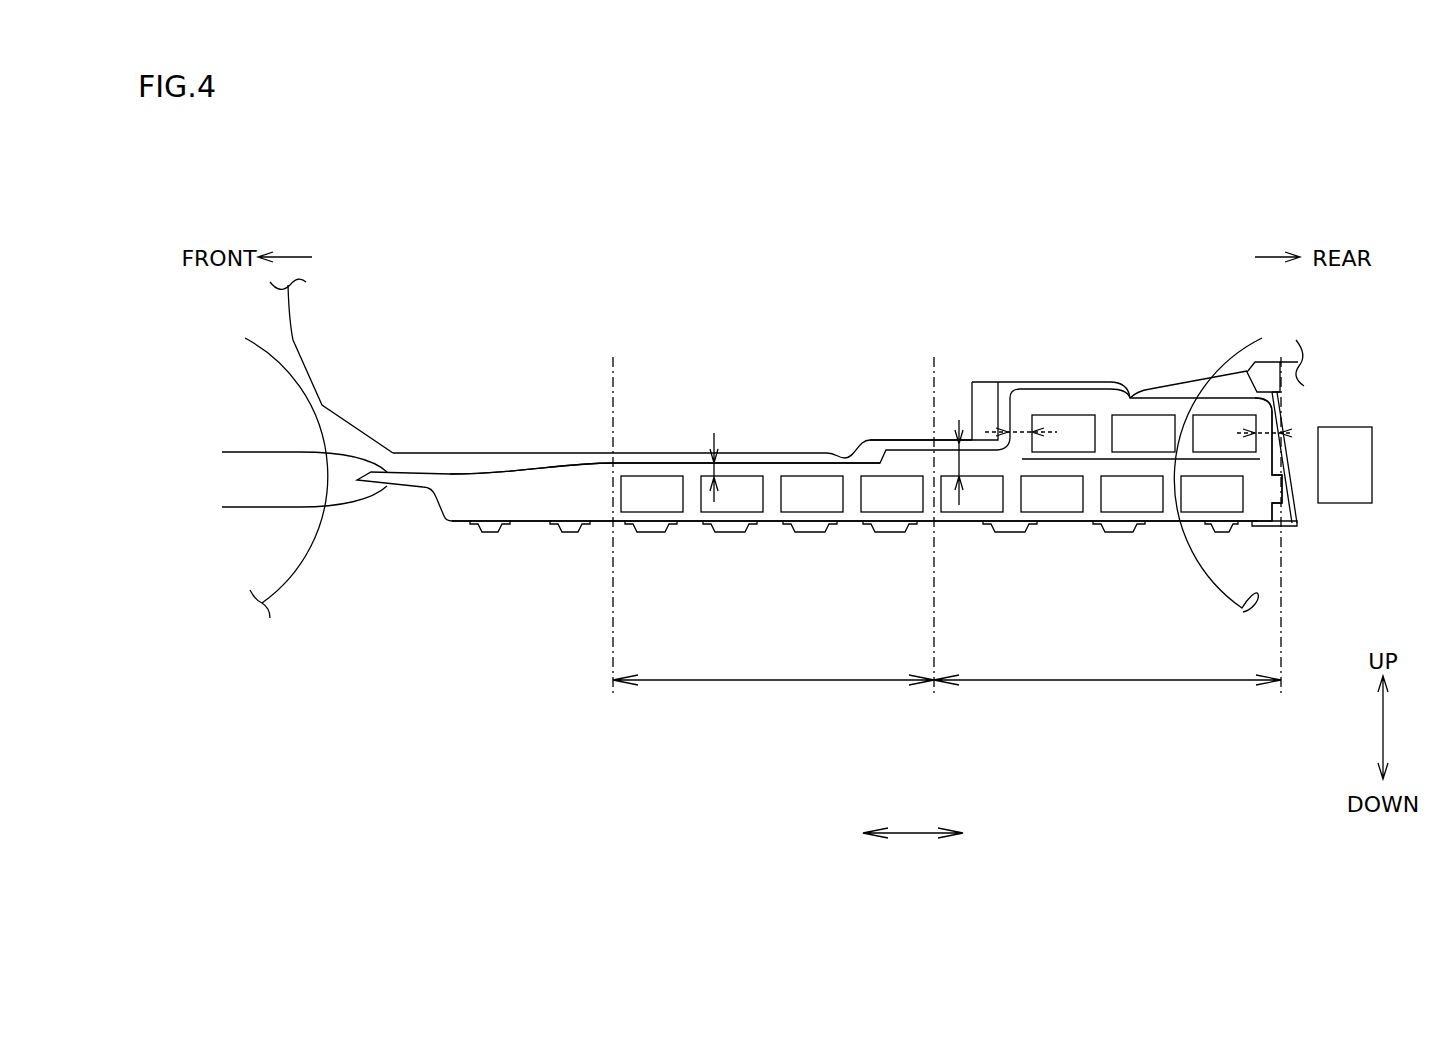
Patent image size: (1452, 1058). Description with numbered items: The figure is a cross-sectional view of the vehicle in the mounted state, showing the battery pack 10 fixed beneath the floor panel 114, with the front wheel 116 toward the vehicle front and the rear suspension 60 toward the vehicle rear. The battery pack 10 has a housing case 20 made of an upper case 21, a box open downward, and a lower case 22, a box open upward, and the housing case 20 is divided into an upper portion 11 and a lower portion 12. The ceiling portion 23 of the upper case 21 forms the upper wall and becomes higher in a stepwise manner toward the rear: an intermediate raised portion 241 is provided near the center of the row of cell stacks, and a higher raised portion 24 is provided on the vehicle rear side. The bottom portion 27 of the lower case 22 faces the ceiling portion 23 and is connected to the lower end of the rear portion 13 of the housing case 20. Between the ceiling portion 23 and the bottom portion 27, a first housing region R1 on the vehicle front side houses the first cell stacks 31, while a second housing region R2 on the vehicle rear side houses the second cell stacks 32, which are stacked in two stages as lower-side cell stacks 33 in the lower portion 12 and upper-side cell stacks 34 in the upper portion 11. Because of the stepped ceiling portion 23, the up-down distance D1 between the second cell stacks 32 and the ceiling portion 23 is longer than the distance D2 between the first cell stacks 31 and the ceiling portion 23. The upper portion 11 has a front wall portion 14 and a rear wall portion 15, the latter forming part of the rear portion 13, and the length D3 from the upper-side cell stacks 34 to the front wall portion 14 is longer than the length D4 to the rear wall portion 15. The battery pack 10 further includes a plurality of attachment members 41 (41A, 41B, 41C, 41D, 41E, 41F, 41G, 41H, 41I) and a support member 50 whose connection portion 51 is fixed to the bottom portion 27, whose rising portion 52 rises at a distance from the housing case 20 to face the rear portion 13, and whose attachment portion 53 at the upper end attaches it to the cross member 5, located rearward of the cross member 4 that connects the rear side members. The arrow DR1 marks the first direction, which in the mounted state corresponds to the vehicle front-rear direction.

The cross member 4 is at (987, 393).
The cross member 5 is at (1268, 372).
The battery pack 10 is at (420, 544).
The upper portion 11 is at (1144, 376).
The lower portion 12 is at (1070, 538).
The rear portion 13 is at (1280, 480).
The front wall portion 14 is at (848, 379).
The rear wall portion 15 is at (1285, 425).
The housing case 20 is at (537, 453).
The upper case 21 is at (289, 457).
The lower case 22 is at (289, 503).
The ceiling portion 23 is at (762, 462).
The raised portion 24 is at (1110, 385).
The bottom portion 27 is at (957, 528).
The first cell stack 31 is at (642, 485).
The second cell stack 32 is at (1100, 470).
The lower-side cell stack 33 is at (982, 500).
The upper-side cell stack 34 is at (1060, 430).
The attachment member 41 is at (844, 566).
The attachment member 41A is at (483, 535).
The attachment member 41B is at (563, 535).
The attachment member 41C is at (654, 535).
The attachment member 41D is at (730, 535).
The attachment member 41E is at (813, 535).
The attachment member 41F is at (890, 535).
The attachment member 41G is at (1013, 535).
The attachment member 41H is at (1120, 535).
The attachment member 41I is at (1223, 535).
The support member 50 is at (1340, 483).
The connection portion 51 is at (1267, 527).
The rising portion 52 is at (1283, 450).
The attachment portion 53 is at (1280, 397).
The rear suspension 60 is at (1372, 472).
The floor panel 114 is at (798, 452).
The front wheel 116 is at (286, 563).
The intermediate raised portion 241 is at (940, 440).
The up-down-direction distance D1 is at (955, 467).
The up-down-direction distance D2 is at (714, 455).
The length D3 is at (1018, 432).
The length D4 is at (1292, 436).
The first housing region R1 is at (790, 682).
The second housing region R2 is at (1125, 682).
The direction DR1 is at (920, 838).